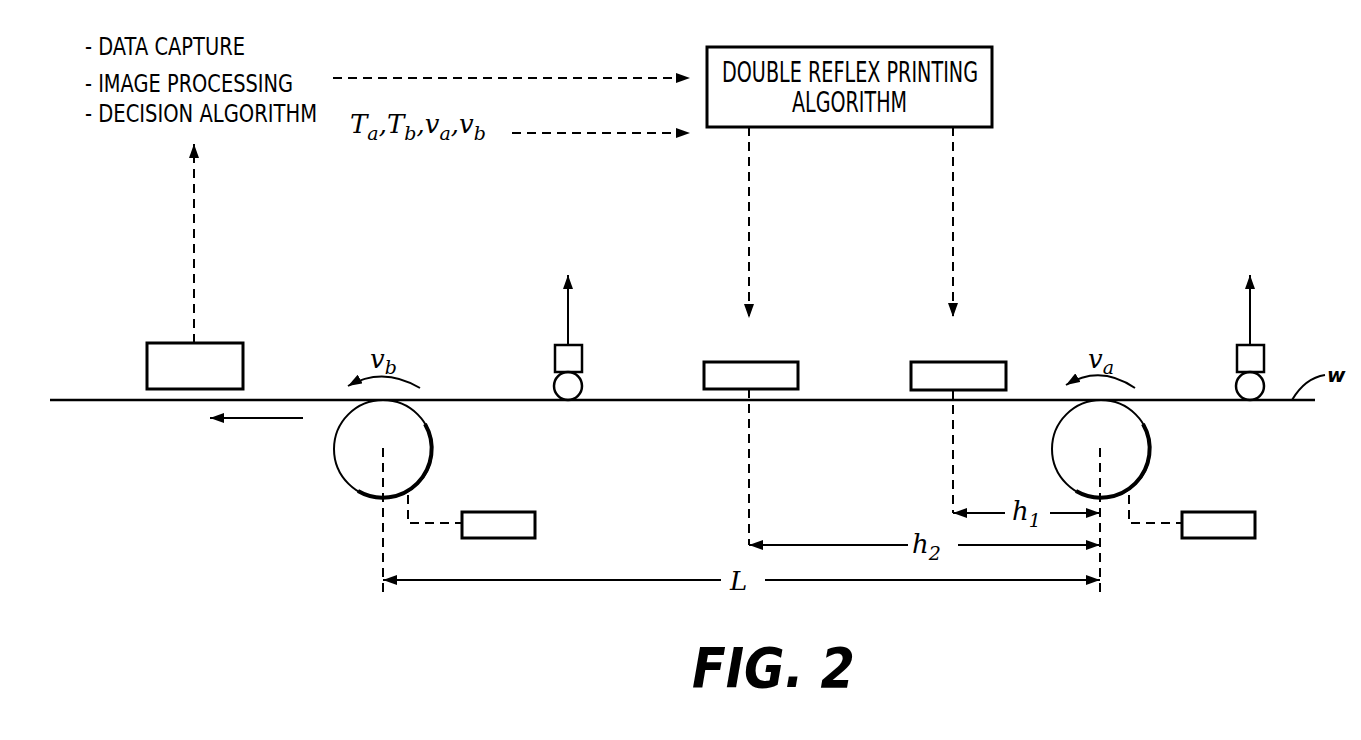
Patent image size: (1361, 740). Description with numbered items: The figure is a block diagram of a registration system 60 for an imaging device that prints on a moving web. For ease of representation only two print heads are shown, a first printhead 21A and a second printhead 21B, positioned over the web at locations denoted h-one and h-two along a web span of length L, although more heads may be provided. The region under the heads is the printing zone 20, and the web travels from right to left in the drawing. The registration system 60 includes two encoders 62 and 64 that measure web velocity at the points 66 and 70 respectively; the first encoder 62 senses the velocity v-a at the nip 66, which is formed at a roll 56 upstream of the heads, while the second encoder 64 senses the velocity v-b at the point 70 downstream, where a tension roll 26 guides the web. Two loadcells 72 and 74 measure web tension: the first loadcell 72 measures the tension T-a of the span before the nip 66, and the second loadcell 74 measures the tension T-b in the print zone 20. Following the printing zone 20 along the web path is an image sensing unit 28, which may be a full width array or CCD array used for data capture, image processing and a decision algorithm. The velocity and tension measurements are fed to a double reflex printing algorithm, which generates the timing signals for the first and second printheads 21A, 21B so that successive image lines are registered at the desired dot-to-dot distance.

The printing zone 20 is at (832, 406).
The first printhead 21A is at (1006, 362).
The second printhead 21B is at (798, 362).
The tension roll 26 is at (352, 490).
The image sensing unit 28 is at (216, 343).
The encoder a roller 56 is at (1150, 455).
The registration system 60 is at (1106, 135).
The first encoder 62 is at (1255, 520).
The second encoder 64 is at (535, 520).
The nip 66 is at (1062, 408).
The velocity measurement point 70 is at (380, 401).
The first loadcell 72 is at (1264, 355).
The second loadcell 74 is at (555, 360).